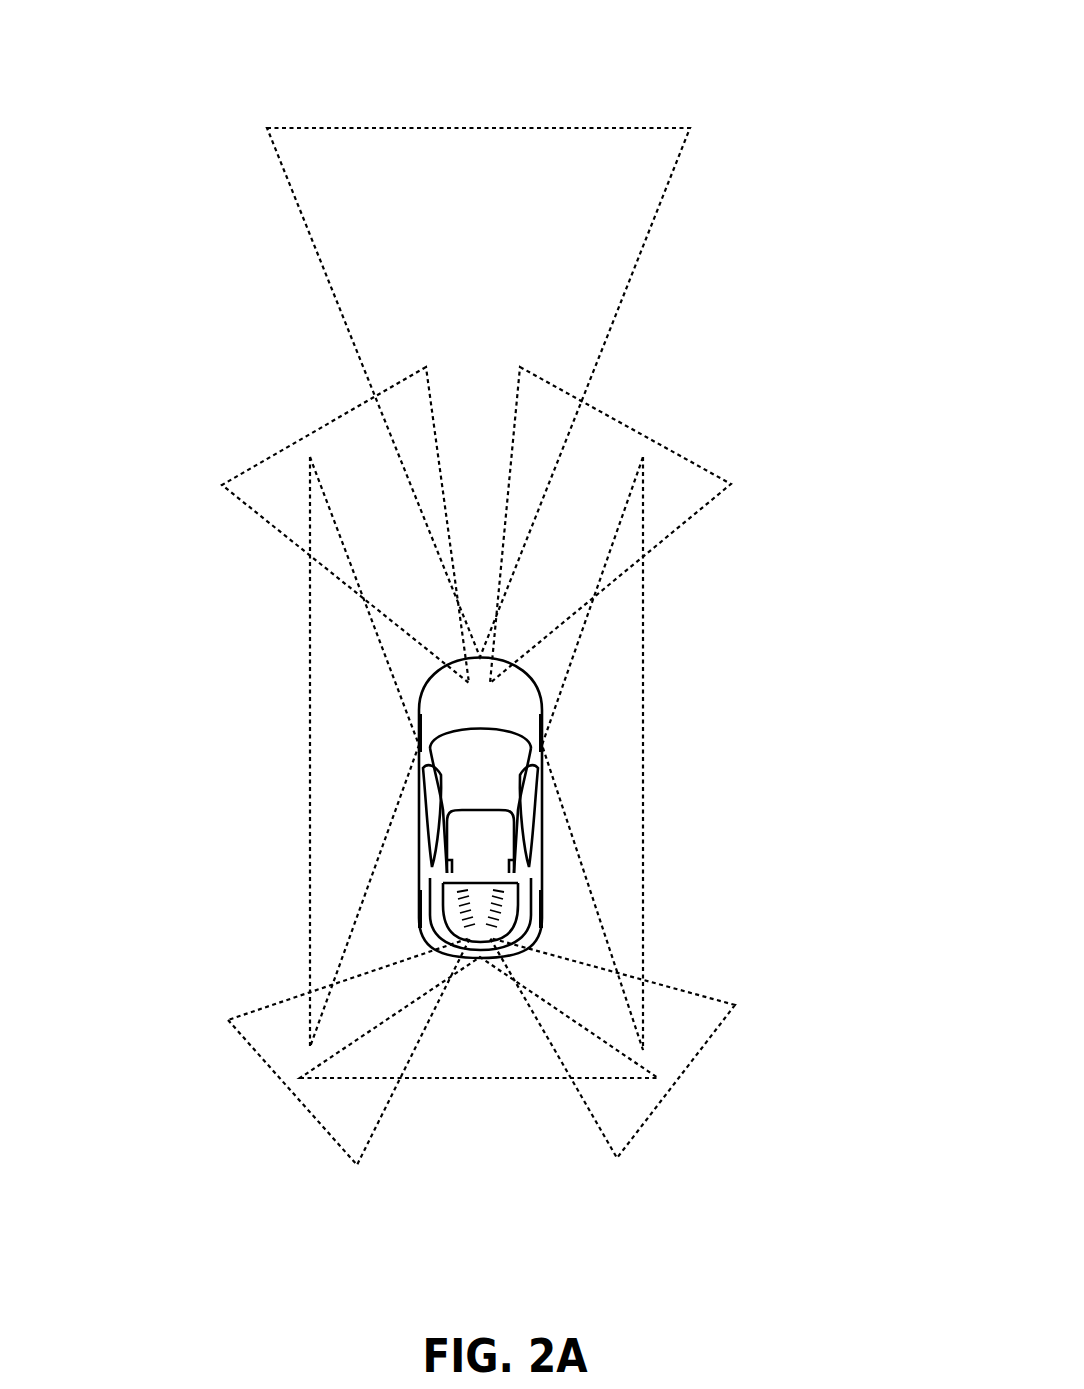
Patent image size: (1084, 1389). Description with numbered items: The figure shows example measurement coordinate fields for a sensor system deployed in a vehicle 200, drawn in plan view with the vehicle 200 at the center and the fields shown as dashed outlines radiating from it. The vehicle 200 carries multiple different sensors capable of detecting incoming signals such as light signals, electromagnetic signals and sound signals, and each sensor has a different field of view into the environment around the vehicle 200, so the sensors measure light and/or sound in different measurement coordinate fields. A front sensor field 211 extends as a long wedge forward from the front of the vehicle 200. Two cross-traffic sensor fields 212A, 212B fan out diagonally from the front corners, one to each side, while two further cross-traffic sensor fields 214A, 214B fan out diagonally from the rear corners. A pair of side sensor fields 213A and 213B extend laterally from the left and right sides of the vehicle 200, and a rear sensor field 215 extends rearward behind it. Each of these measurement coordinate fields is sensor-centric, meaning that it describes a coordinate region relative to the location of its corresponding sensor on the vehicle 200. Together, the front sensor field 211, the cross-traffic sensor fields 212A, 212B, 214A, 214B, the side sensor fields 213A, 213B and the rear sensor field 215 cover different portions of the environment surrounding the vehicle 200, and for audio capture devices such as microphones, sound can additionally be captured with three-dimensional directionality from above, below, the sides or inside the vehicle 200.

The vehicle 200 is at (543, 905).
The front sensor field 211 is at (557, 128).
The cross-traffic sensor field 212A is at (290, 447).
The cross-traffic sensor field 212B is at (657, 435).
The side sensor field 213A is at (308, 775).
The side sensor field 213B is at (643, 775).
The cross-traffic sensor field 214A is at (265, 1062).
The cross-traffic sensor field 214B is at (708, 1042).
The rear sensor field 215 is at (450, 1082).